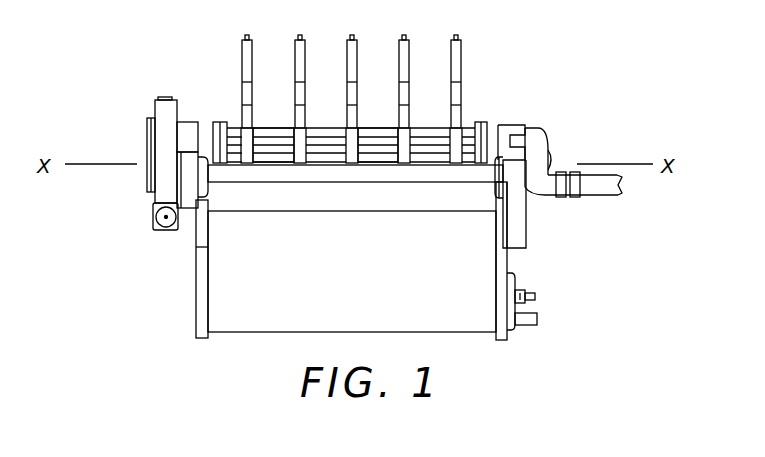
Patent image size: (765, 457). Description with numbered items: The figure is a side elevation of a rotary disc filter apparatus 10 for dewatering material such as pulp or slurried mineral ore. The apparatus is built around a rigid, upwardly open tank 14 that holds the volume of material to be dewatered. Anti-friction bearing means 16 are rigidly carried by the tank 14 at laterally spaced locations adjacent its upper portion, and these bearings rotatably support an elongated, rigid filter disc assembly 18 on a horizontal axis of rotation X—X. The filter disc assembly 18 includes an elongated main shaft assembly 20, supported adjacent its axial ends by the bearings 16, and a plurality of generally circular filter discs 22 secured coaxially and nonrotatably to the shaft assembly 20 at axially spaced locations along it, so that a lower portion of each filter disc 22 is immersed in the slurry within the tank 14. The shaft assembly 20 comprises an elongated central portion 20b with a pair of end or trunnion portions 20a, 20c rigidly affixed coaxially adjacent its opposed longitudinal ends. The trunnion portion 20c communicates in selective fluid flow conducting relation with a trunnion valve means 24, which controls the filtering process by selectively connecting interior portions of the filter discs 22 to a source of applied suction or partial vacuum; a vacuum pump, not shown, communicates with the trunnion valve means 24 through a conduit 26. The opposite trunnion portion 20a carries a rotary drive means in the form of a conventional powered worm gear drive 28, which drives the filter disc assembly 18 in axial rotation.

The rotary disc filter apparatus 10 is at (485, 93).
The tank 14 is at (215, 236).
The anti-friction bearing means 16 is at (220, 122).
The filter disc assembly 18 is at (433, 128).
The main shaft assembly 20 is at (277, 128).
The trunnion portion 20a is at (160, 110).
The central portion 20b is at (380, 128).
The trunnion portion 20c is at (512, 127).
The filter discs 22 is at (241, 40).
The trunnion valve means 24 is at (540, 133).
The conduit 26 is at (597, 190).
The worm gear drive 28 is at (163, 198).